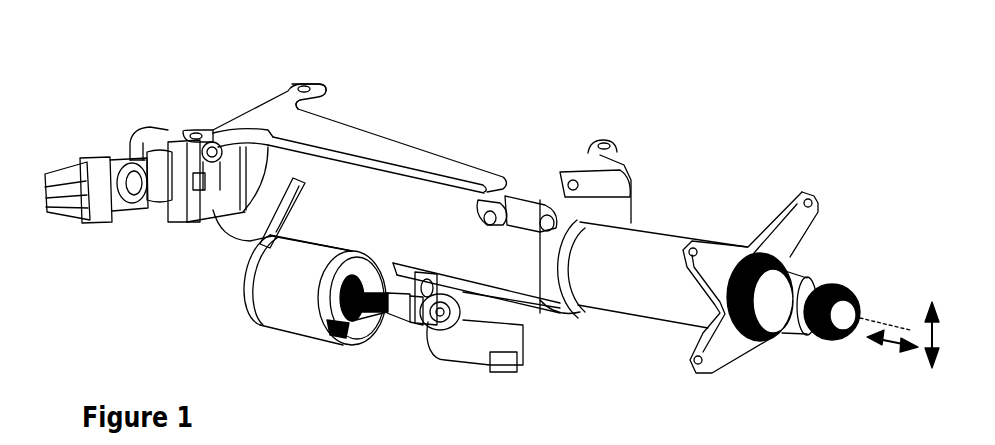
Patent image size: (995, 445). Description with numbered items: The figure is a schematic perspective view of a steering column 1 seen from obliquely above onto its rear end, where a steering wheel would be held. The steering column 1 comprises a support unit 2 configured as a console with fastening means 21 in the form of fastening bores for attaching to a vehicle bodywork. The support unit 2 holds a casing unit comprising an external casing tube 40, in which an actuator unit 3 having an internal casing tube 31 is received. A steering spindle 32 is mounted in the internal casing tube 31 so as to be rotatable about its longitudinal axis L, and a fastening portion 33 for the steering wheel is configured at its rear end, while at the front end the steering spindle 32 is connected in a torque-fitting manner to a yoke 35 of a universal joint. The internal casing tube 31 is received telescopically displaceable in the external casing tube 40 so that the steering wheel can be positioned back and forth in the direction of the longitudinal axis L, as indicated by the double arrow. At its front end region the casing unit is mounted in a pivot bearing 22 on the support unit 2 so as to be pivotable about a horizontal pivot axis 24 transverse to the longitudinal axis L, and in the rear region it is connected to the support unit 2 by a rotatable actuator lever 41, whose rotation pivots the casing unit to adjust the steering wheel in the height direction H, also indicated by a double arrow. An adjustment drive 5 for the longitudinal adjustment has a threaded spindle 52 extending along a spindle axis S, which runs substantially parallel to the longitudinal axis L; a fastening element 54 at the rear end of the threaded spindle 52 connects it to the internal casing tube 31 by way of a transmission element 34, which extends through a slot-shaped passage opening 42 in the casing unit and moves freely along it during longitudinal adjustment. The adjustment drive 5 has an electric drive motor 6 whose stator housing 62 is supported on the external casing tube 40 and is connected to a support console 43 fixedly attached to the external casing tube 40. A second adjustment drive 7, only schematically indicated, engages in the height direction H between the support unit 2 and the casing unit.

The steering column 1 is at (524, 68).
The support unit 2 is at (413, 143).
The actuator unit 3 is at (676, 210).
The adjustment drive 5 is at (348, 365).
The electric drive motor 6 is at (309, 330).
The second adjustment drive 7 is at (493, 343).
The fastening means 21 is at (203, 130).
The pivot bearing 22 is at (216, 142).
The pivot axis 24 is at (320, 107).
The internal casing tube 31 is at (663, 247).
The steering spindle 32 is at (795, 284).
The fastening portion 33 is at (834, 293).
The transmission element 34 is at (463, 297).
The yoke 35 is at (182, 208).
The external casing tube 40 is at (418, 212).
The actuator lever 41 is at (530, 215).
The passage opening 42 is at (565, 240).
The support console 43 is at (288, 220).
The threaded spindle 52 is at (369, 300).
The fastening element 54 is at (420, 330).
The stator housing 62 is at (287, 293).
The spindle axis S is at (247, 273).
The longitudinal axis L is at (910, 332).
The height direction H is at (932, 338).